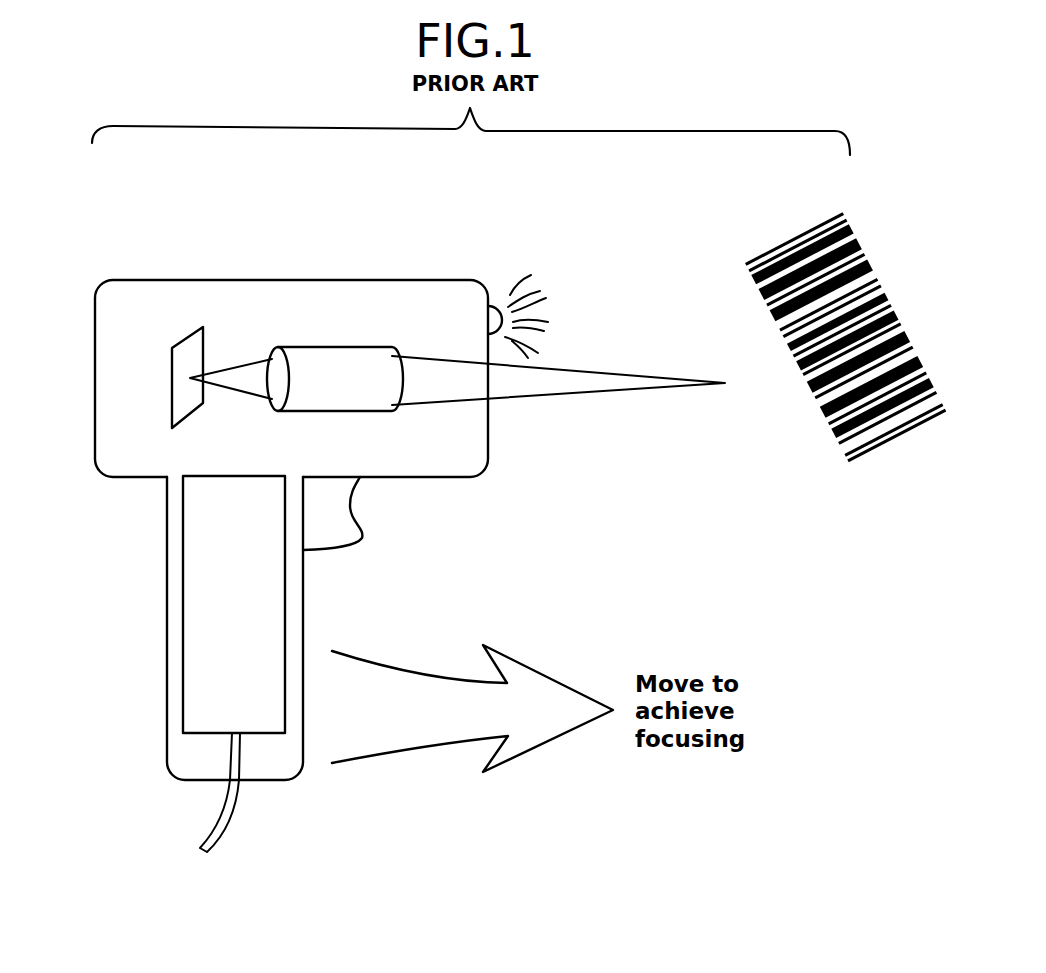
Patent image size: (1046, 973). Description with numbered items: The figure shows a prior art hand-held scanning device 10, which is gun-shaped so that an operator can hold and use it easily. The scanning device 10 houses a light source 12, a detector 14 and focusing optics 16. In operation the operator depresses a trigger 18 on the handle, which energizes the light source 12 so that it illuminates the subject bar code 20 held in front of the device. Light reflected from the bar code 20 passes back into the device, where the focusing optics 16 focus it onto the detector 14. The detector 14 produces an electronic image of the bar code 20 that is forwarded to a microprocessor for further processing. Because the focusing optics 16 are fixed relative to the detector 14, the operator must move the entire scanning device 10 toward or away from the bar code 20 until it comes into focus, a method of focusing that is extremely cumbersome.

The scanning device 10 is at (318, 254).
The light source 12 is at (504, 307).
The detector 14 is at (170, 372).
The focusing optics 16 is at (358, 348).
The trigger 18 is at (350, 508).
The bar code 20 is at (777, 242).